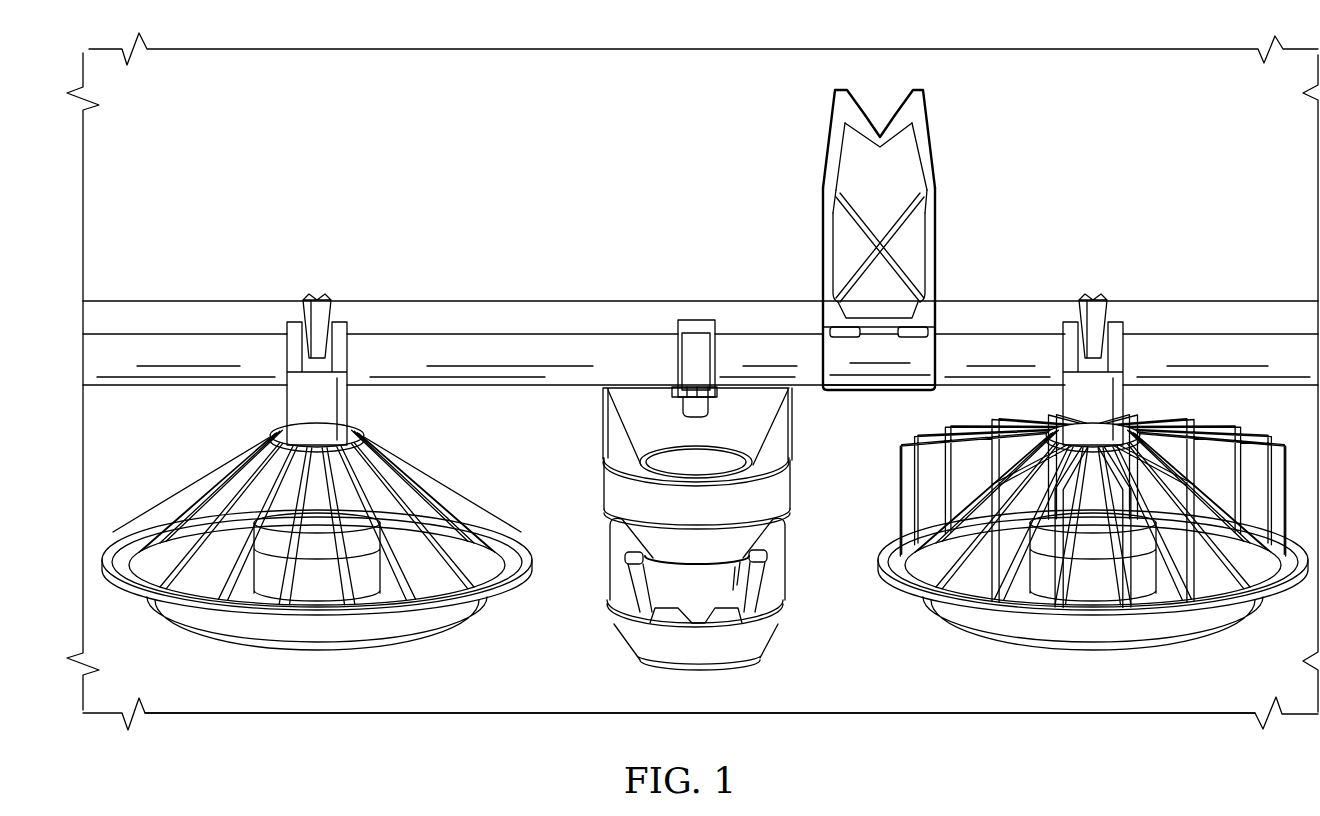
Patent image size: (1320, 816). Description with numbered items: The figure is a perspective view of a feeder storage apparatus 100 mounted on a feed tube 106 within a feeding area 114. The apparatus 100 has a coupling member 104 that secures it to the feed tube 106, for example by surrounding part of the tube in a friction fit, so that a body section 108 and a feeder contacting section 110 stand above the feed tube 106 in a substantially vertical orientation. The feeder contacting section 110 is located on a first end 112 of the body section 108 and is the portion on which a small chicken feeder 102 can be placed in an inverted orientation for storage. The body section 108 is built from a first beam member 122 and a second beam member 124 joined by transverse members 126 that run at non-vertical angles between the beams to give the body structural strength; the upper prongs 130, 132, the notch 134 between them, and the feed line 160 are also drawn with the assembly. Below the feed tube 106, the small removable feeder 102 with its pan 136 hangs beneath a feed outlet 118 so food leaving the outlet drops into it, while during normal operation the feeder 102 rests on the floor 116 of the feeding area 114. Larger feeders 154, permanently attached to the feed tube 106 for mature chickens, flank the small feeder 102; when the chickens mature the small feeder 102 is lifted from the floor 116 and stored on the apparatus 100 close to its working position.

The feeder storage apparatus 100 is at (1047, 142).
The chicken feeder 102 is at (695, 473).
The coupling member 104 is at (880, 392).
The feed tube 106 is at (1200, 333).
The body section 108 is at (879, 253).
The feeder contacting section 110 is at (868, 124).
The first end 112 is at (872, 307).
The feeding area 114 is at (436, 727).
The floor 116 is at (868, 692).
The feed outlet 118 is at (695, 318).
The first beam member 122 is at (822, 247).
The second beam member 124 is at (937, 235).
The transverse members 126 is at (845, 262).
The first prong 130 is at (828, 135).
The second prong 132 is at (928, 140).
The notch 134 is at (866, 125).
The feed pan 136 is at (790, 480).
The larger feeders 154 is at (166, 638).
The feed line 160 is at (483, 300).